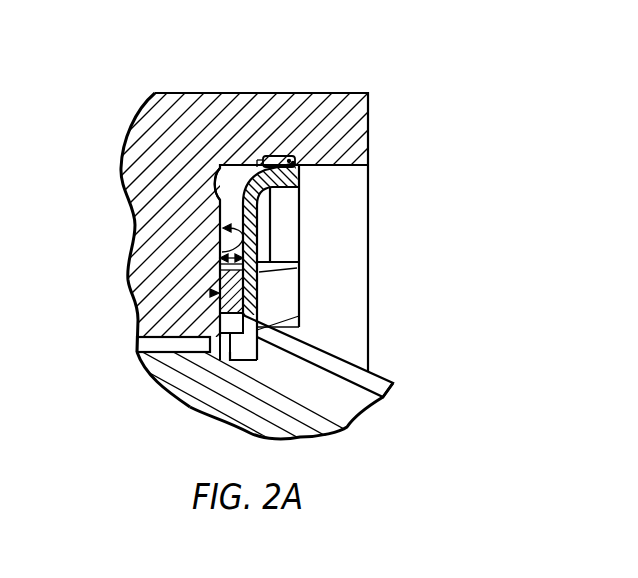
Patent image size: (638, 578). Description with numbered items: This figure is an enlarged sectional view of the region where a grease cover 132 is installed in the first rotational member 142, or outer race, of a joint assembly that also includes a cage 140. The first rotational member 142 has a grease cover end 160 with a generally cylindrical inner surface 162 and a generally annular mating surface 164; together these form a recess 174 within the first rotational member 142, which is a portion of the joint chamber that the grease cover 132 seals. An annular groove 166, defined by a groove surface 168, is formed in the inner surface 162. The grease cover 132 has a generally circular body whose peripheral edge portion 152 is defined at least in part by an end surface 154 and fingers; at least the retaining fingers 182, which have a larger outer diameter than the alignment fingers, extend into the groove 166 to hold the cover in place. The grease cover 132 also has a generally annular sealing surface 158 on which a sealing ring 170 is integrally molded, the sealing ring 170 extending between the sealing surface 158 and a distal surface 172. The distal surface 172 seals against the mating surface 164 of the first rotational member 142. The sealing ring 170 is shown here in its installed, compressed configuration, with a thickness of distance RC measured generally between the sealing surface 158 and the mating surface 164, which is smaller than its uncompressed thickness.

The first rotational member 142 is at (322, 108).
The grease cover end 160 is at (267, 198).
The end surface 154 is at (297, 159).
The peripheral edge portion 152 is at (303, 192).
The recess 174 is at (390, 229).
The retaining fingers 182 is at (285, 294).
The grease cover 132 is at (338, 372).
The cage 140 is at (317, 423).
The annular groove 166 is at (264, 160).
The groove surface 168 is at (284, 156).
The inner surface 162 is at (236, 173).
The sealing surface 158 is at (220, 228).
The mating surface 164 is at (218, 258).
The distance RC is at (212, 293).
The distal surface 172 is at (135, 330).
The sealing ring 170 is at (137, 352).